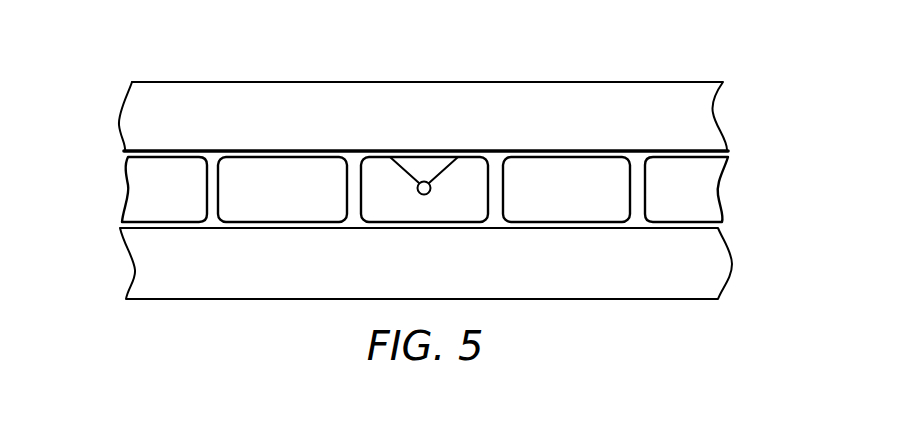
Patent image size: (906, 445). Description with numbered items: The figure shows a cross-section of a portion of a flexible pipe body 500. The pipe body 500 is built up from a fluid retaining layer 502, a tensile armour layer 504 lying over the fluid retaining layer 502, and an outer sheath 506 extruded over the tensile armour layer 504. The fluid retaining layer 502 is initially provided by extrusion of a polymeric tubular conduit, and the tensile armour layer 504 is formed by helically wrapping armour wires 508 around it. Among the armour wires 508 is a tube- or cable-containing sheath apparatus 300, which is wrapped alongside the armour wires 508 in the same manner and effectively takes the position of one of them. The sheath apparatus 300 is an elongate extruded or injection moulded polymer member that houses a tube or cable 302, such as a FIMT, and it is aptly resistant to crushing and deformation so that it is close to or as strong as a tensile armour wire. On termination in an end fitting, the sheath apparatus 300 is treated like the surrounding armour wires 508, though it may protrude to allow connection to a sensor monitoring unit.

The flexible pipe body 500 is at (124, 72).
The fluid retaining layer 502 is at (700, 263).
The tensile armour layer 504 is at (453, 200).
The outer sheath 506 is at (702, 116).
The armour wires 508 is at (283, 211).
The sheath apparatus 300 is at (424, 199).
The tube or cable 302 is at (424, 181).